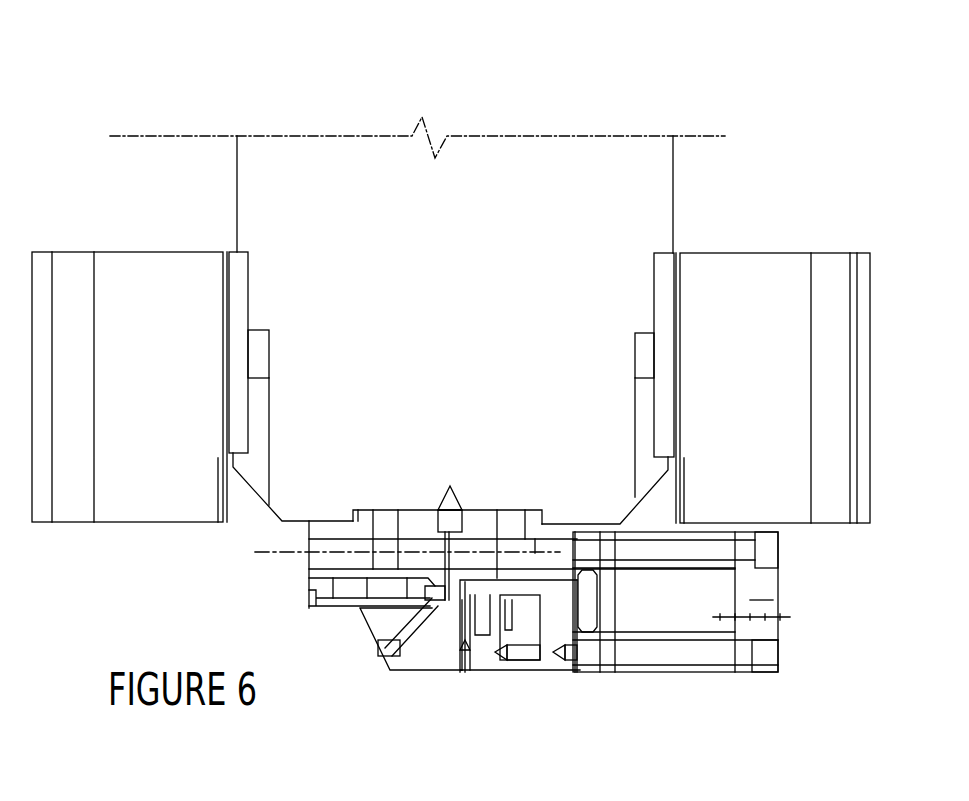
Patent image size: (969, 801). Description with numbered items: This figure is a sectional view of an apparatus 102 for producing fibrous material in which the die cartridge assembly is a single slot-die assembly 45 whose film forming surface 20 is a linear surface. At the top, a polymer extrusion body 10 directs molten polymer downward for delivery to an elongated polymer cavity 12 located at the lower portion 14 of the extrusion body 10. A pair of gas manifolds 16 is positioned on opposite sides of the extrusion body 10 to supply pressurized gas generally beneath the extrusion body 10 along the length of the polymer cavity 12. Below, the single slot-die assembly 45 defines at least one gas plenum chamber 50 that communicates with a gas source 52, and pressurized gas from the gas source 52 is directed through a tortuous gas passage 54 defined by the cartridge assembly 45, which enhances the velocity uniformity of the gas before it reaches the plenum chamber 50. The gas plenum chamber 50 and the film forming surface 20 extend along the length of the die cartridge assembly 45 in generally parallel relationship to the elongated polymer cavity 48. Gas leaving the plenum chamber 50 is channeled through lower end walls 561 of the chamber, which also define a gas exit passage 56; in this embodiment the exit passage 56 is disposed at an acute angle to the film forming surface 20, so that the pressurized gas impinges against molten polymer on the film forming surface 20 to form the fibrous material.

The apparatus 102 is at (495, 74).
The polymer extrusion body 10 is at (297, 157).
The gas manifold 16 is at (156, 275).
The elongated polymer cavity 12 is at (450, 475).
The lower portion 14 is at (286, 503).
The single slot-die assembly 45 is at (296, 614).
The gas source 52 is at (668, 594).
The elongated polymer cavity 48 is at (383, 650).
The film forming surface 20 is at (446, 661).
The gas exit passage 56 is at (456, 675).
The lower end walls 561 is at (465, 656).
The gas plenum chamber 50 is at (468, 633).
The tortuous gas passage 54 is at (500, 614).